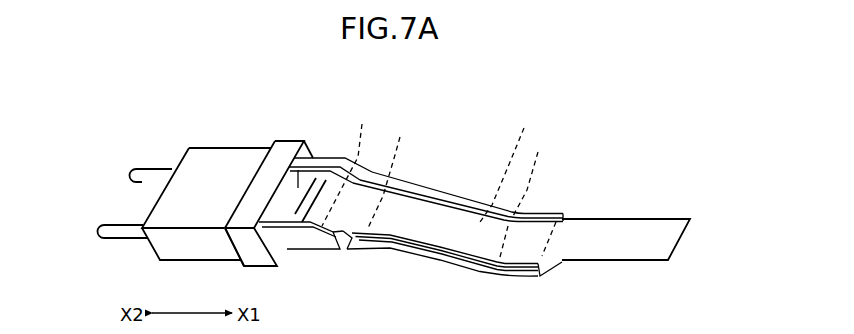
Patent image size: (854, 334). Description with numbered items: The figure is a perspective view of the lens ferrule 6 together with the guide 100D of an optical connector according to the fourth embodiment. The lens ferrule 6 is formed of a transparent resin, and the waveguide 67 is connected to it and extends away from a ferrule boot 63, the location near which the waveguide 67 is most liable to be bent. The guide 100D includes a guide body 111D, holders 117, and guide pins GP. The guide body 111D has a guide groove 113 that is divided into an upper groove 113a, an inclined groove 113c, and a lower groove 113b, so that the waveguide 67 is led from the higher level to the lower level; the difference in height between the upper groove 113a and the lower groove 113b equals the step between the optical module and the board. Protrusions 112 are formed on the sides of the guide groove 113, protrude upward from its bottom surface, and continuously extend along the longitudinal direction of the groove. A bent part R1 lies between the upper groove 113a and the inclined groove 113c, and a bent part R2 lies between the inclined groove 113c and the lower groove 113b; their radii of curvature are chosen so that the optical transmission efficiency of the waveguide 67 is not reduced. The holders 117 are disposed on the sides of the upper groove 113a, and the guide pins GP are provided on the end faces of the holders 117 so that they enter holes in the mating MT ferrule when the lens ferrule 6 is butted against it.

The lens ferrule 6 is at (227, 162).
The guide pins GP is at (137, 183).
The ferrule boot 63 is at (305, 156).
The holders 117 is at (321, 158).
The guide groove 113 is at (445, 185).
The upper groove 113a is at (354, 165).
The lower groove 113b is at (553, 212).
The inclined groove 113c is at (517, 165).
The protrusions 112 is at (443, 212).
The guide body 111D is at (446, 277).
The guide 100D is at (477, 199).
The bent part R1 is at (389, 173).
The bent part R2 is at (519, 204).
The waveguide 67 is at (603, 230).